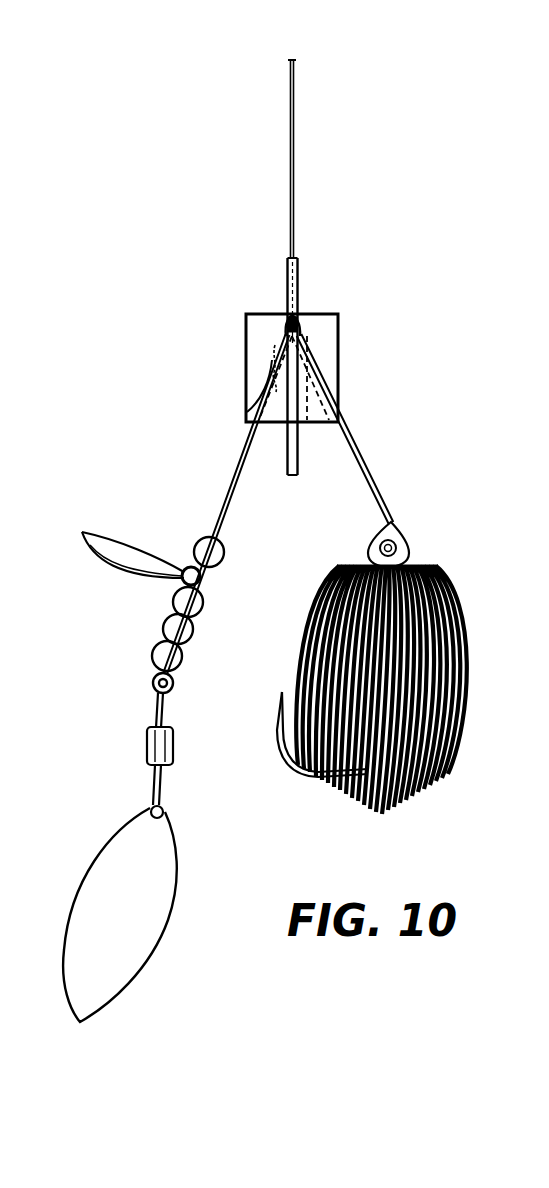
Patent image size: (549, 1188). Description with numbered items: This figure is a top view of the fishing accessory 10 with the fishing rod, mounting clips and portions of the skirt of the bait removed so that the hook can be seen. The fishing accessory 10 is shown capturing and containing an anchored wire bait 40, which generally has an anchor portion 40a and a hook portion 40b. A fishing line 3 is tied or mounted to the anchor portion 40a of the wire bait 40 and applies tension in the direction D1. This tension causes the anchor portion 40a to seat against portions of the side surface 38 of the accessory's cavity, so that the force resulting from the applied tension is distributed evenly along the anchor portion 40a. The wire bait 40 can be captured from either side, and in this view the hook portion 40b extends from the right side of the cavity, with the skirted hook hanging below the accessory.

The fishing line 3 is at (293, 148).
The fishing accessory 10 is at (235, 308).
The side surface 38 is at (246, 412).
The anchored wire bait 40 is at (232, 482).
The anchor portion 40a is at (308, 323).
The hook portion 40b is at (264, 715).
The direction of applied tension D1 is at (292, 1).